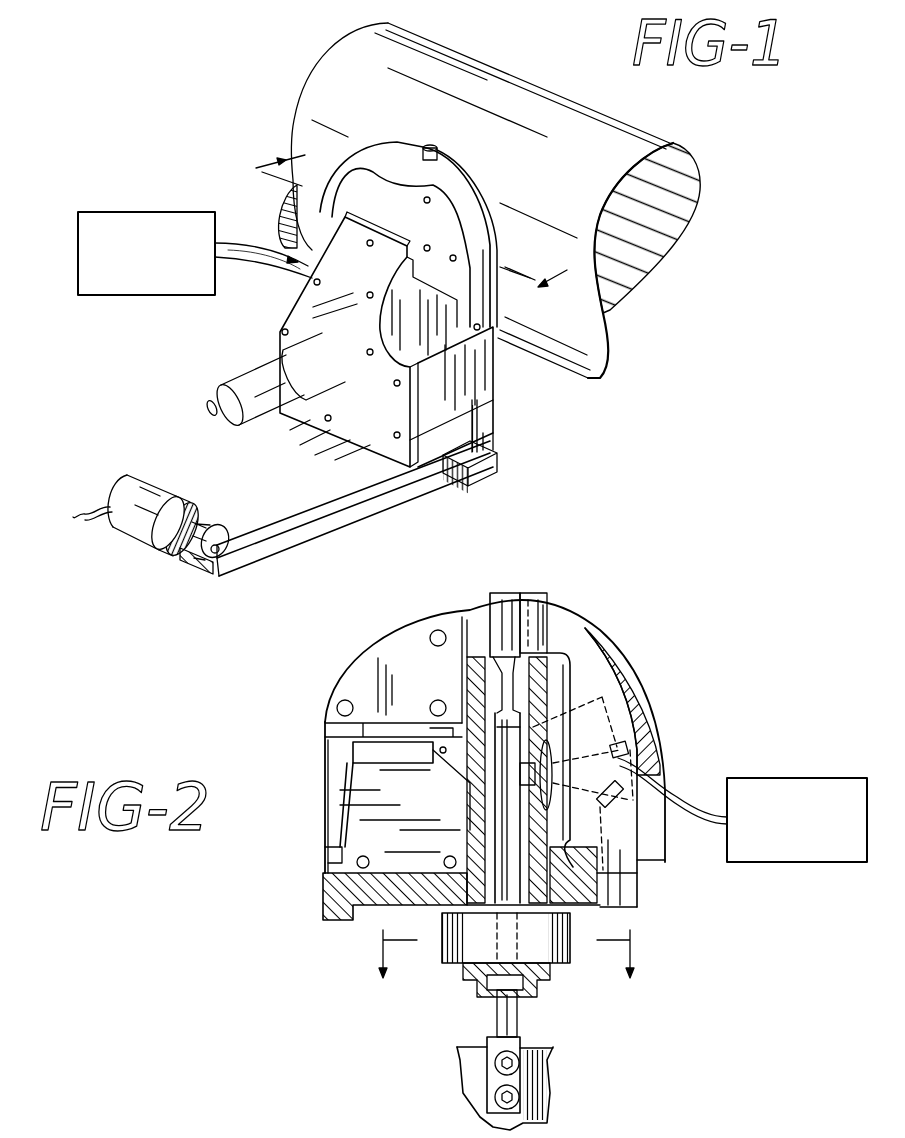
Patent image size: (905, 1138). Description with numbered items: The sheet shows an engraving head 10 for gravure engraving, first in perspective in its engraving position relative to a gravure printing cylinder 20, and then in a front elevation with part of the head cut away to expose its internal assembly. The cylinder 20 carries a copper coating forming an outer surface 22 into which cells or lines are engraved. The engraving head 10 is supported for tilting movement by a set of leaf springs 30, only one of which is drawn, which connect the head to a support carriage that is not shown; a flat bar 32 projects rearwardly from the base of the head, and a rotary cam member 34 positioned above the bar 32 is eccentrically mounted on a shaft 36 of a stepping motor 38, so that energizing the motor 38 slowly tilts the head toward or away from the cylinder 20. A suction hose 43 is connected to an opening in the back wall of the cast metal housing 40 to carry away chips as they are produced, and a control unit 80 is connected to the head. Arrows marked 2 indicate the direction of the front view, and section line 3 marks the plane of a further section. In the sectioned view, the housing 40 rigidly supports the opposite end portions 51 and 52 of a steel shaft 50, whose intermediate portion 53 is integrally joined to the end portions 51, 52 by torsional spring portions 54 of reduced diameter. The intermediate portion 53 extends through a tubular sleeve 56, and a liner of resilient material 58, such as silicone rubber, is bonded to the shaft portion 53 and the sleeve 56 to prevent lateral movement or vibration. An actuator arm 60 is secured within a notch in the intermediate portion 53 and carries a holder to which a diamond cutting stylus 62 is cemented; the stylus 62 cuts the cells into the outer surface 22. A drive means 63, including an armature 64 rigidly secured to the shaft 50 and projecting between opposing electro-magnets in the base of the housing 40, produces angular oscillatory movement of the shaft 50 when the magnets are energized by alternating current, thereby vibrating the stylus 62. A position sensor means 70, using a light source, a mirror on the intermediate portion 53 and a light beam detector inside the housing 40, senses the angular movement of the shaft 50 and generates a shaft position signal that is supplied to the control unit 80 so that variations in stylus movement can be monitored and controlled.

In FIG. 1, the section line 2- 2 is at (401, 231).
In FIG. 2, the section line 3- 3 is at (506, 952).
In FIG. 1, the engraving head 10 is at (280, 250).
In FIG. 1, the gravure printing cylinder 20 is at (663, 143).
In FIG. 1, the outer surface 22 is at (490, 97).
In FIG. 1, the leaf springs 30 is at (493, 443).
In FIG. 1, the flat bar 32 is at (353, 486).
In FIG. 1, the rotary cam member 34 is at (230, 545).
In FIG. 1, the shaft 36 is at (180, 552).
In FIG. 1, the stepping motor 38 is at (120, 527).
In FIG. 1, the cast metal housing 40 is at (317, 417).
In FIG. 2, the cast metal housing 40 is at (623, 887).
In FIG. 1, the suction hose 43 is at (245, 383).
In FIG. 2, the shaft 50 is at (500, 848).
In FIG. 2, the end portion 51 is at (502, 597).
In FIG. 2, the end portion 52 is at (513, 1073).
In FIG. 2, the intermediate portion 53 is at (500, 820).
In FIG. 2, the torsional spring portions 54 is at (507, 690).
In FIG. 2, the tubular sleeve 56 is at (540, 680).
In FIG. 2, the liner of resilient material 58 is at (530, 730).
In FIG. 2, the actuator arm 60 is at (463, 763).
In FIG. 2, the cutting stylus 62 is at (450, 765).
In FIG. 2, the drive means 63 is at (430, 975).
In FIG. 2, the armature 64 is at (570, 953).
In FIG. 2, the position sensor means 70 is at (583, 754).
In FIG. 1, the control unit 80 is at (85, 296).
In FIG. 2, the control unit 80 is at (797, 780).